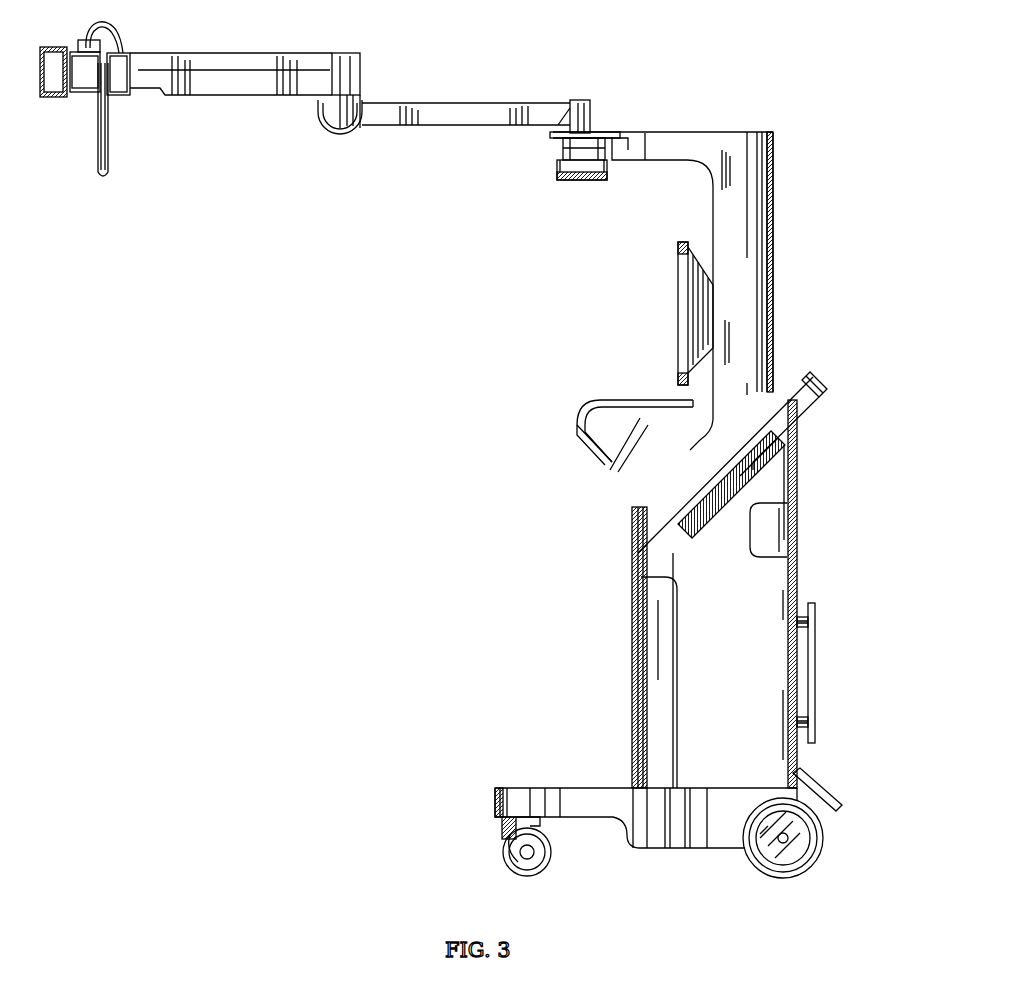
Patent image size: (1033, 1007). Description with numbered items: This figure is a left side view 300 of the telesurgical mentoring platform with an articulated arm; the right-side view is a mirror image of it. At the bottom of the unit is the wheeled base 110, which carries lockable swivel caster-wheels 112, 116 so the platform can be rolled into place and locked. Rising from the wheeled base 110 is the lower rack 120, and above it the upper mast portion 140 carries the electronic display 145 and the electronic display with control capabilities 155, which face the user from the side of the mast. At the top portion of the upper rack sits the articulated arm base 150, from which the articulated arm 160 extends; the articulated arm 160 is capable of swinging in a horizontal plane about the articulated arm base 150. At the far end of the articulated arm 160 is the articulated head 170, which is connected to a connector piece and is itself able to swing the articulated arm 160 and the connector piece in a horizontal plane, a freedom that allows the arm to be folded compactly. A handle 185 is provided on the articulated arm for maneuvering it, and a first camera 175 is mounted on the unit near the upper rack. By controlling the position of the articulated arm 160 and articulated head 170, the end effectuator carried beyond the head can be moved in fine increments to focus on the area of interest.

The wheeled base 110 is at (612, 802).
The lockable swivel caster-wheel 112 is at (507, 848).
The lockable swivel caster-wheel 116 is at (793, 832).
The lower rack 120 is at (740, 580).
The mast 140 is at (740, 218).
The electronic display 145 is at (693, 318).
The articulated arm base 150 is at (741, 147).
The electronic display with control capabilities 155 is at (652, 470).
The articulated arm 160 is at (420, 117).
The articulated head 170 is at (356, 108).
The first camera 175 is at (572, 180).
The handle 185 is at (108, 177).
The side view of the telesurgical platform 300 is at (447, 368).